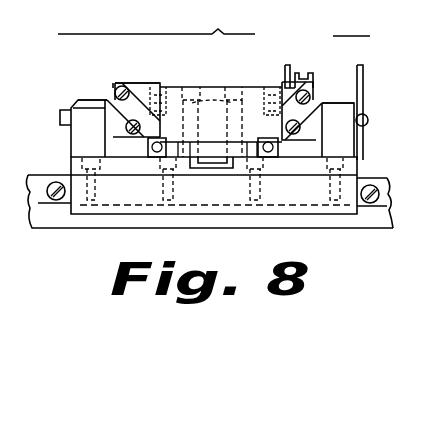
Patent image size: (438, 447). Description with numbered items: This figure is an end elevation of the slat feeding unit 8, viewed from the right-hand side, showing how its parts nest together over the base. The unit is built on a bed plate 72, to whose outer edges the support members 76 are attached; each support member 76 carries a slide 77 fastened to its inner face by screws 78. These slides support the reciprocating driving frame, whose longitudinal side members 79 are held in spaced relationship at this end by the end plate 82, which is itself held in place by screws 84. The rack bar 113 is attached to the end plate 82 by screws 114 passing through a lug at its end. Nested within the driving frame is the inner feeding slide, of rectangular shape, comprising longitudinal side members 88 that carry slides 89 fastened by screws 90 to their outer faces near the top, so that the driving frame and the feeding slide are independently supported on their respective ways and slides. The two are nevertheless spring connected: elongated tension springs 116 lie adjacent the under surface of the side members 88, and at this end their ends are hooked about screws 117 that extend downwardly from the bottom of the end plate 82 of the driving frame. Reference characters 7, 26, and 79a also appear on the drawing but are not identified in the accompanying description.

The base plate 7 is at (397, 190).
The slat feeding unit 8 is at (214, 26).
The guide rail 26 is at (364, 77).
The bed plate 72 is at (354, 168).
The support members 76 is at (355, 105).
The slides 77 is at (320, 107).
The screws 78 is at (368, 121).
The longitudinal side members 79 is at (297, 75).
The upright bar 79a is at (289, 65).
The end plate 82 is at (207, 87).
The screws 84 is at (309, 96).
The longitudinal side members 88 is at (268, 100).
The slides 89 is at (284, 85).
The screws 90 is at (254, 92).
The rack bar 113 is at (218, 164).
The screws 114 is at (212, 113).
The tension springs 116 is at (268, 150).
The screws 117 is at (262, 156).